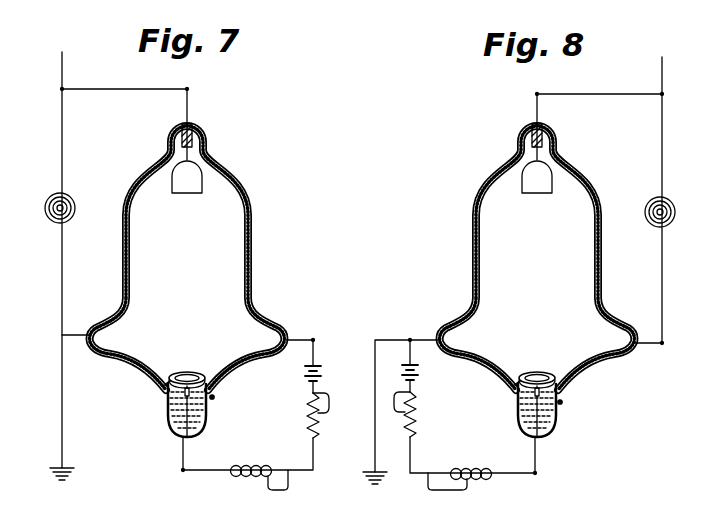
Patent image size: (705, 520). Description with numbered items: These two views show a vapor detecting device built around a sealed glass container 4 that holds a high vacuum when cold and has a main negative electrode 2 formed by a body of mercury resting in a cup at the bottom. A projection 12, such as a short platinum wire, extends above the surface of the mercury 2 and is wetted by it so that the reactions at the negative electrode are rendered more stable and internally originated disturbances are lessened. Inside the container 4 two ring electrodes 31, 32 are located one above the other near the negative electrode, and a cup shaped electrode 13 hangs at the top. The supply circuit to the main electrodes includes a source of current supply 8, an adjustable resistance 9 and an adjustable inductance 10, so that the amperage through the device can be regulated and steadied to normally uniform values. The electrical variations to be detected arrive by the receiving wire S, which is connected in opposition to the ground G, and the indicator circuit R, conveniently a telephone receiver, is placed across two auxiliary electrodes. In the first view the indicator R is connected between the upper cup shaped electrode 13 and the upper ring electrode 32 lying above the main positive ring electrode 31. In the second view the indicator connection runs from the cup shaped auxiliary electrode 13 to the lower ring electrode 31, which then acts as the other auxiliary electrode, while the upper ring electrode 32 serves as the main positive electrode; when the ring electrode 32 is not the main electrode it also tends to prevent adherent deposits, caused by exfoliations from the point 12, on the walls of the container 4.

In FIG. 7, the negative electrode 2 is at (207, 420).
In FIG. 8, the negative electrode 2 is at (557, 425).
In FIG. 7, the container 4 is at (250, 258).
In FIG. 8, the container 4 is at (475, 246).
In FIG. 7, the source of current supply 8 is at (321, 378).
In FIG. 8, the source of current supply 8 is at (418, 377).
In FIG. 7, the adjustable resistance 9 is at (309, 415).
In FIG. 8, the adjustable resistance 9 is at (411, 414).
In FIG. 7, the adjustable inductance 10 is at (260, 467).
In FIG. 8, the adjustable inductance 10 is at (460, 468).
In FIG. 7, the projection 12 is at (214, 398).
In FIG. 8, the projection 12 is at (562, 403).
In FIG. 7, the cup shaped electrode 13 is at (187, 141).
In FIG. 8, the cup shaped electrode 13 is at (537, 143).
In FIG. 7, the lower ring electrode 31 is at (165, 392).
In FIG. 8, the lower ring electrode 31 is at (515, 392).
In FIG. 7, the upper ring electrode 32 is at (191, 374).
In FIG. 8, the upper ring electrode 32 is at (541, 380).
In FIG. 7, the receiving wire S is at (62, 68).
In FIG. 8, the receiving wire S is at (662, 73).
In FIG. 7, the indicator circuit R is at (75, 208).
In FIG. 8, the indicator circuit R is at (645, 212).
In FIG. 7, the ground G is at (66, 482).
In FIG. 8, the ground G is at (379, 485).